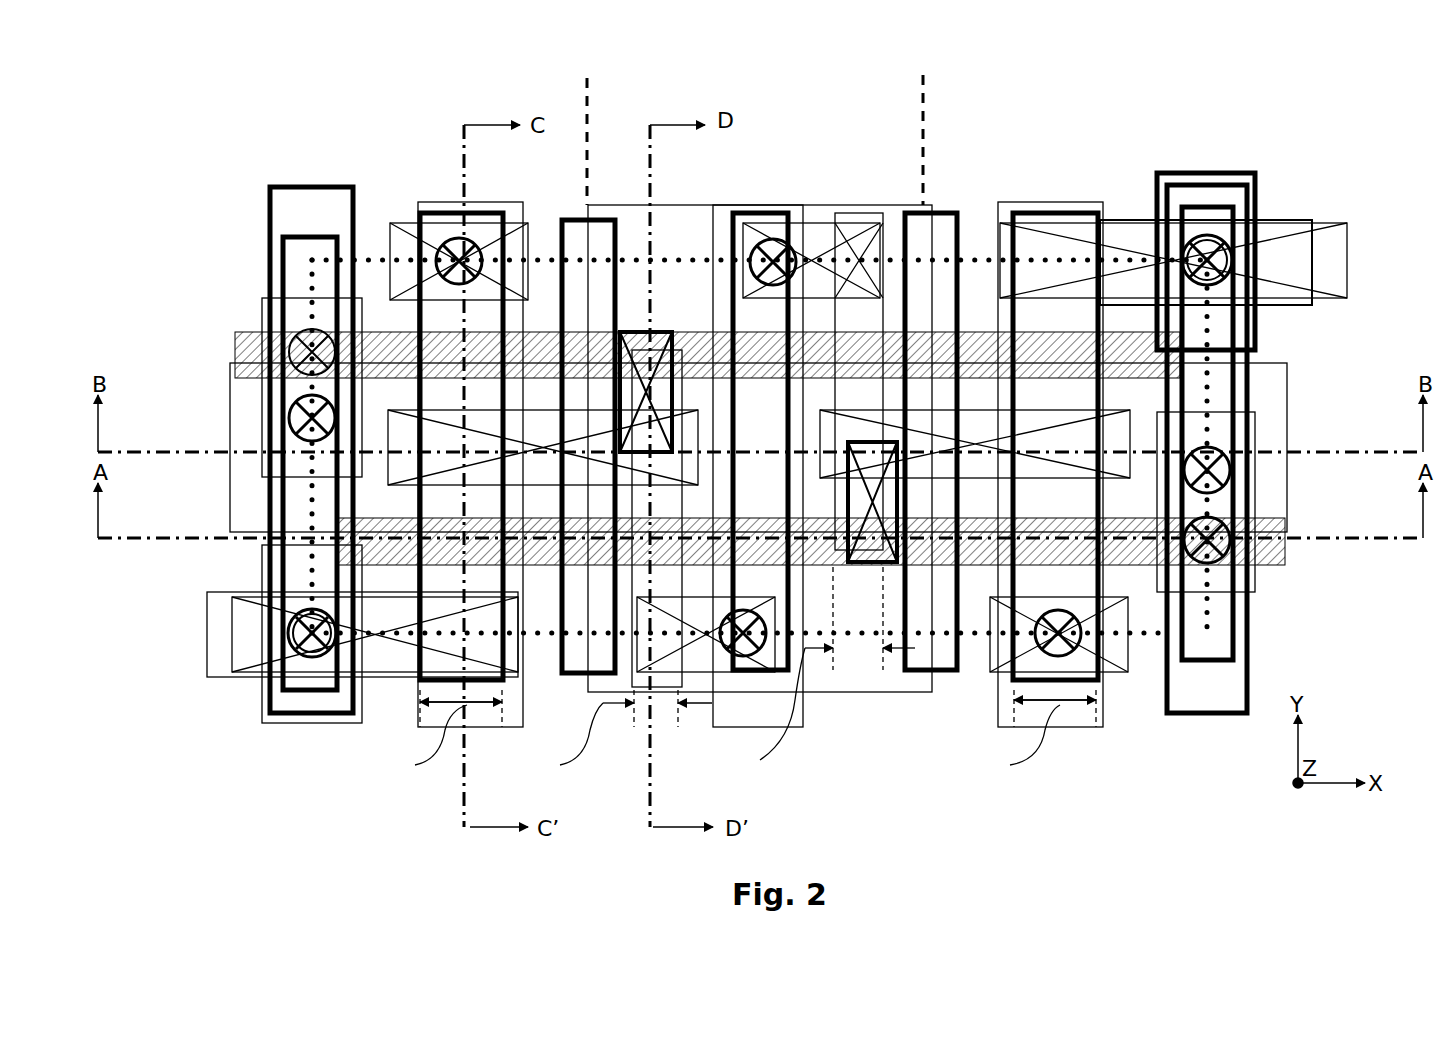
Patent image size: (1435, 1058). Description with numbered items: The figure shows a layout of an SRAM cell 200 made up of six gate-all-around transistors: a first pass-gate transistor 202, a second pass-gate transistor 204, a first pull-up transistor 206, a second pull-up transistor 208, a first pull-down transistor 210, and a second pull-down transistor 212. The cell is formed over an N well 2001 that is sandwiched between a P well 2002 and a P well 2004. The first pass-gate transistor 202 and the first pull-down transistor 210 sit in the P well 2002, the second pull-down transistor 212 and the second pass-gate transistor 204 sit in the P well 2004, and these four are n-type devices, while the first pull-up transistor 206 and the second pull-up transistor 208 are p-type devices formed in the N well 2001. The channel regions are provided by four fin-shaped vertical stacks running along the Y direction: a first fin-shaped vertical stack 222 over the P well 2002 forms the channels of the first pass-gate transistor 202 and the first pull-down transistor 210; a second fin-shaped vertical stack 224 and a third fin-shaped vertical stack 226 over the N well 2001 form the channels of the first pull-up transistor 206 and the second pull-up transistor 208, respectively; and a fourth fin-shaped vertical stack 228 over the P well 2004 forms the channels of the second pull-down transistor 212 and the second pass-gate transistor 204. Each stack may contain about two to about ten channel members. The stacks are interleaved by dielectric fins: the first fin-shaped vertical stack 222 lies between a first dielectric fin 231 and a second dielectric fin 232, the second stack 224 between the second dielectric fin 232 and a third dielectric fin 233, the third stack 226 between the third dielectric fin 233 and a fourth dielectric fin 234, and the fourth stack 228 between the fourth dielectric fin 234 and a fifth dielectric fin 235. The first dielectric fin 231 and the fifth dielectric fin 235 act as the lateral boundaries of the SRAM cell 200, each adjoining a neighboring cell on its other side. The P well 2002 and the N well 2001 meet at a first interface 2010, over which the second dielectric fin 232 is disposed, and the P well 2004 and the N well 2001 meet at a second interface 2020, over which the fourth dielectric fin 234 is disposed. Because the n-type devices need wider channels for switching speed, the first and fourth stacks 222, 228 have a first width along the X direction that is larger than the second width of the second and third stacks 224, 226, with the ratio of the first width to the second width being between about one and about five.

The SRAM cell 200 is at (265, 97).
The first pass-gate transistor 202 is at (367, 348).
The second pass-gate transistor 204 is at (1230, 495).
The first pull-up transistor 206 is at (695, 500).
The second pull-up transistor 208 is at (951, 240).
The first pull-down transistor 210 is at (367, 547).
The second pull-down transistor 212 is at (1105, 362).
The first fin-shaped vertical stack 222 is at (447, 213).
The second fin-shaped vertical stack 224 is at (655, 352).
The third fin-shaped vertical stack 226 is at (853, 213).
The fourth fin-shaped vertical stack 228 is at (1040, 213).
The first dielectric fin 231 is at (285, 250).
The second dielectric fin 232 is at (570, 222).
The third dielectric fin 233 is at (760, 215).
The fourth dielectric fin 234 is at (945, 240).
The fifth dielectric fin 235 is at (1250, 195).
The N well 2001 is at (760, 376).
The P well 2002 is at (411, 200).
The P well 2004 is at (1104, 200).
The first interface 2010 is at (591, 130).
The second interface 2020 is at (930, 127).